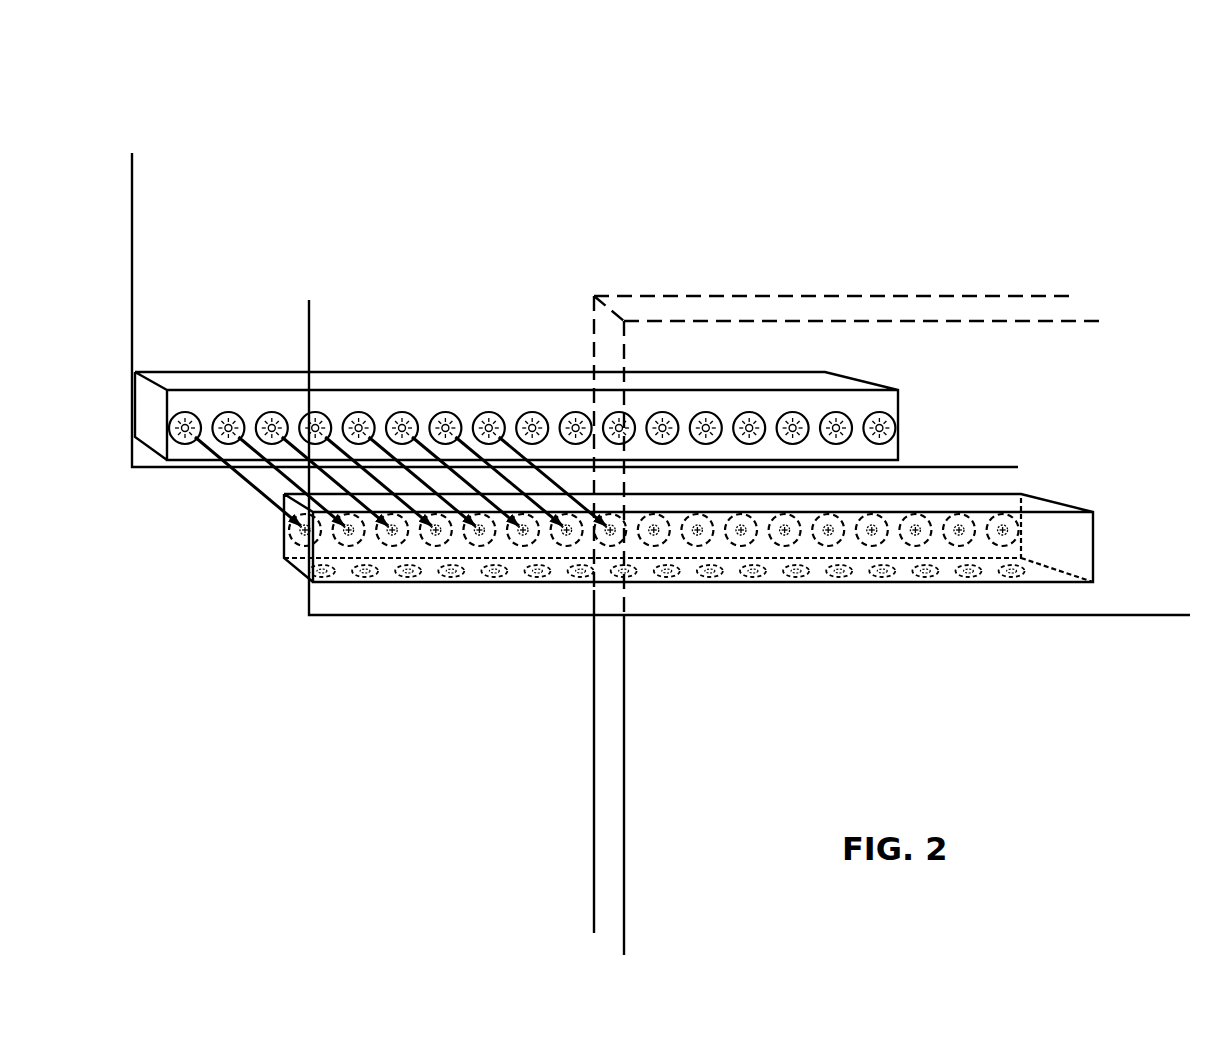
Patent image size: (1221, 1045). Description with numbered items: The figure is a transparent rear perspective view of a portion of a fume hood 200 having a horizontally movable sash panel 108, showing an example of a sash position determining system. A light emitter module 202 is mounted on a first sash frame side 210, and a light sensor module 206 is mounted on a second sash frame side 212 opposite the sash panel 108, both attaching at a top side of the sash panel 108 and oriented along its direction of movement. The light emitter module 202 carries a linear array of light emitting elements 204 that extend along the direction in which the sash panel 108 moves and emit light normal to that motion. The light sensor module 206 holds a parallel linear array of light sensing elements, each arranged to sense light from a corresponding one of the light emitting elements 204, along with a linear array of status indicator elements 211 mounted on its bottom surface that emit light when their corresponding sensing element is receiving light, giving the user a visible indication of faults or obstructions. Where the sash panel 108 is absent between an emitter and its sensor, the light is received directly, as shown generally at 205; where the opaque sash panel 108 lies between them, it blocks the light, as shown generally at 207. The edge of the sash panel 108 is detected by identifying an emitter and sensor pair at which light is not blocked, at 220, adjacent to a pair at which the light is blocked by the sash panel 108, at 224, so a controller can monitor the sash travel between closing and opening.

The fume hood 200 is at (967, 233).
The light emitter module 202 is at (450, 380).
The light emitting elements 204 is at (268, 412).
The light received directly 205 is at (233, 482).
The light sensor module 206 is at (392, 547).
The light blocked by sash panel 207 is at (1022, 484).
The first sash frame side 210 is at (181, 205).
The status indicator elements 211 is at (527, 577).
The second sash frame side 212 is at (308, 316).
The location where light is not blocked 220 is at (607, 546).
The location where light is blocked 224 is at (652, 546).
The sash panel 108 is at (612, 788).